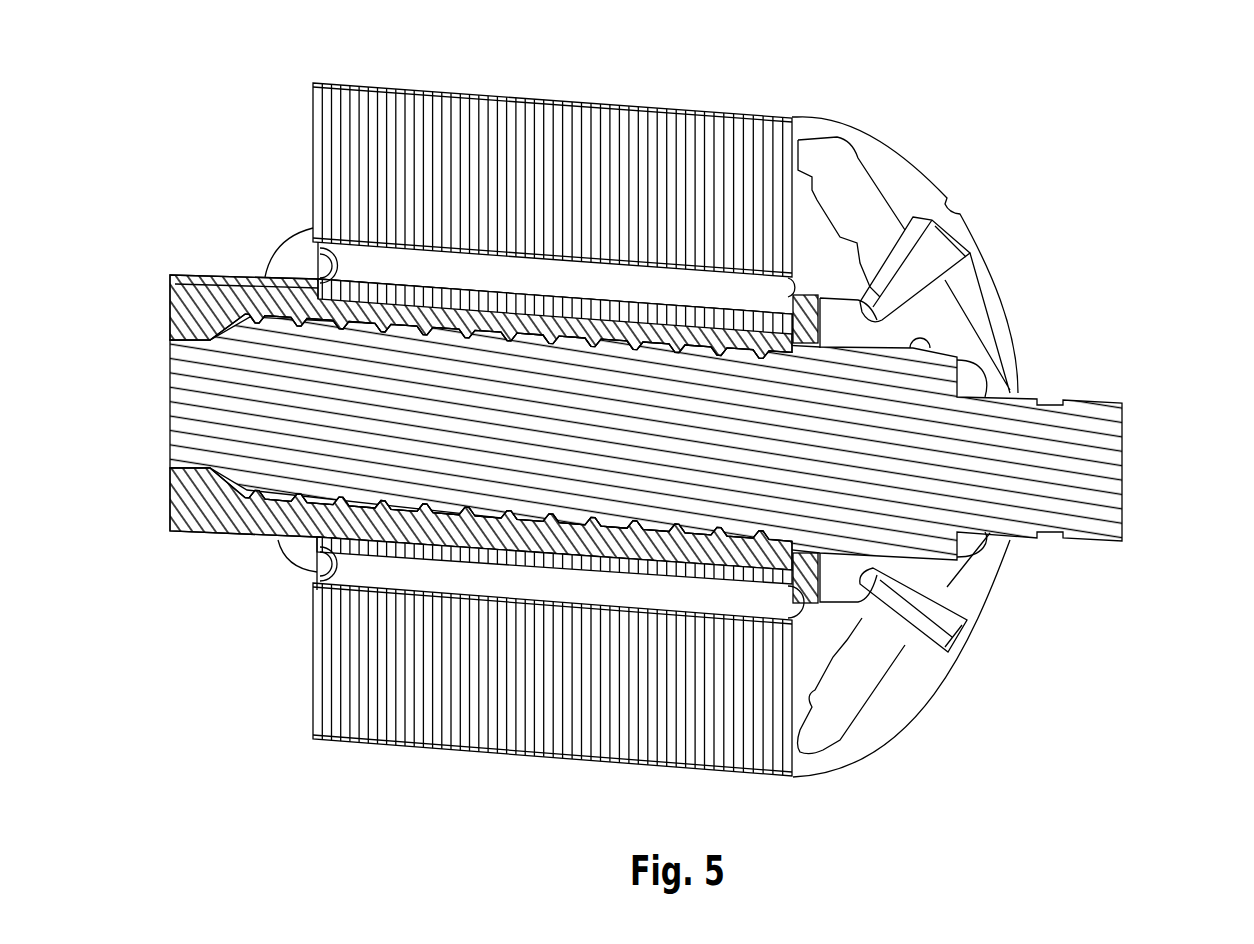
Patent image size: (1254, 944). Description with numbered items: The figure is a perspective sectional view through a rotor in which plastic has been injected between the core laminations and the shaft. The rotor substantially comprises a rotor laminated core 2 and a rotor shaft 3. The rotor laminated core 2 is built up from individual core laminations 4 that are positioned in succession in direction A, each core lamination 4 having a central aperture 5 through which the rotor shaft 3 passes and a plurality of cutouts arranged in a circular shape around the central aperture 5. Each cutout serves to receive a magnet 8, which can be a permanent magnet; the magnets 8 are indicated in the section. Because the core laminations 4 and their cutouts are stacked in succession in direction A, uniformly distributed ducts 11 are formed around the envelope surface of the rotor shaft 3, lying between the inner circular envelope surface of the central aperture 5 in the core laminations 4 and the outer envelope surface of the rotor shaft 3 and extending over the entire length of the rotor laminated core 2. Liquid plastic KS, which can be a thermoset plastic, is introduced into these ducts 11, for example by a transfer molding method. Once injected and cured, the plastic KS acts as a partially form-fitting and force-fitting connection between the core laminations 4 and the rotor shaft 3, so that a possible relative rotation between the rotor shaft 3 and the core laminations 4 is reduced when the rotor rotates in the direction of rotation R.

The rotor laminated core 2 is at (288, 702).
The rotor shaft 3 is at (1080, 472).
The core lamination 4 is at (977, 297).
The central aperture 5 is at (170, 281).
The magnet 8 is at (848, 212).
The duct 11 is at (427, 313).
The plastic KS is at (543, 305).
The direction A is at (343, 423).
The direction of rotation R is at (1081, 581).